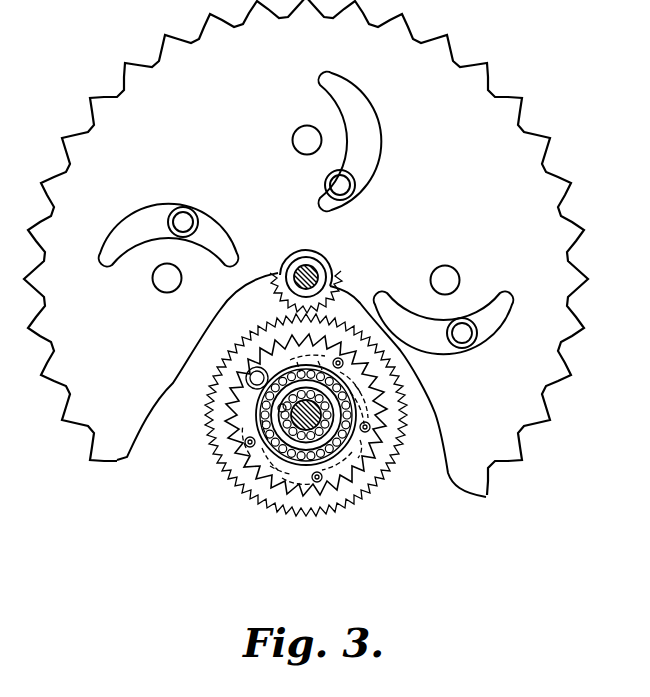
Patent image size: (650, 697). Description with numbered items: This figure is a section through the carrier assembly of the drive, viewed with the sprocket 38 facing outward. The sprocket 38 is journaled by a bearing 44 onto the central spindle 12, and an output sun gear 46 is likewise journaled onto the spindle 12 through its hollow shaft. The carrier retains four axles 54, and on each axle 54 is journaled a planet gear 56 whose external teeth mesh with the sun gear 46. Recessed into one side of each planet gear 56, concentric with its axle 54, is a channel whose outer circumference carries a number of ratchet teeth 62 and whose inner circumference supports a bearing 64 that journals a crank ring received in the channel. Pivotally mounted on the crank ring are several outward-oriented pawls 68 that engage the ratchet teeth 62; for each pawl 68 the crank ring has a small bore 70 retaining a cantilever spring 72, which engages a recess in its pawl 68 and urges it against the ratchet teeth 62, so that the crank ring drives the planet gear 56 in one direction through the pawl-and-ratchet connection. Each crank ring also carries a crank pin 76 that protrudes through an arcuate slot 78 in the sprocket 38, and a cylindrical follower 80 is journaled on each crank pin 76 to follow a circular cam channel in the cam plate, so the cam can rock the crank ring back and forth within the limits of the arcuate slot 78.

The spindle 12 is at (321, 266).
The sprocket 38 is at (488, 92).
The bearing 44 is at (280, 270).
The output sun gear 46 is at (275, 298).
The axle 54 is at (456, 266).
The planet gear 56 is at (233, 480).
The ratchet teeth 62 is at (230, 438).
The bearing 64 is at (358, 434).
The pawl 68 is at (338, 487).
The small bore 70 is at (270, 476).
The cantilever spring 72 is at (290, 474).
The crank pin 76 is at (458, 340).
The arcuate slot 78 is at (502, 293).
The cylindrical follower 80 is at (473, 343).